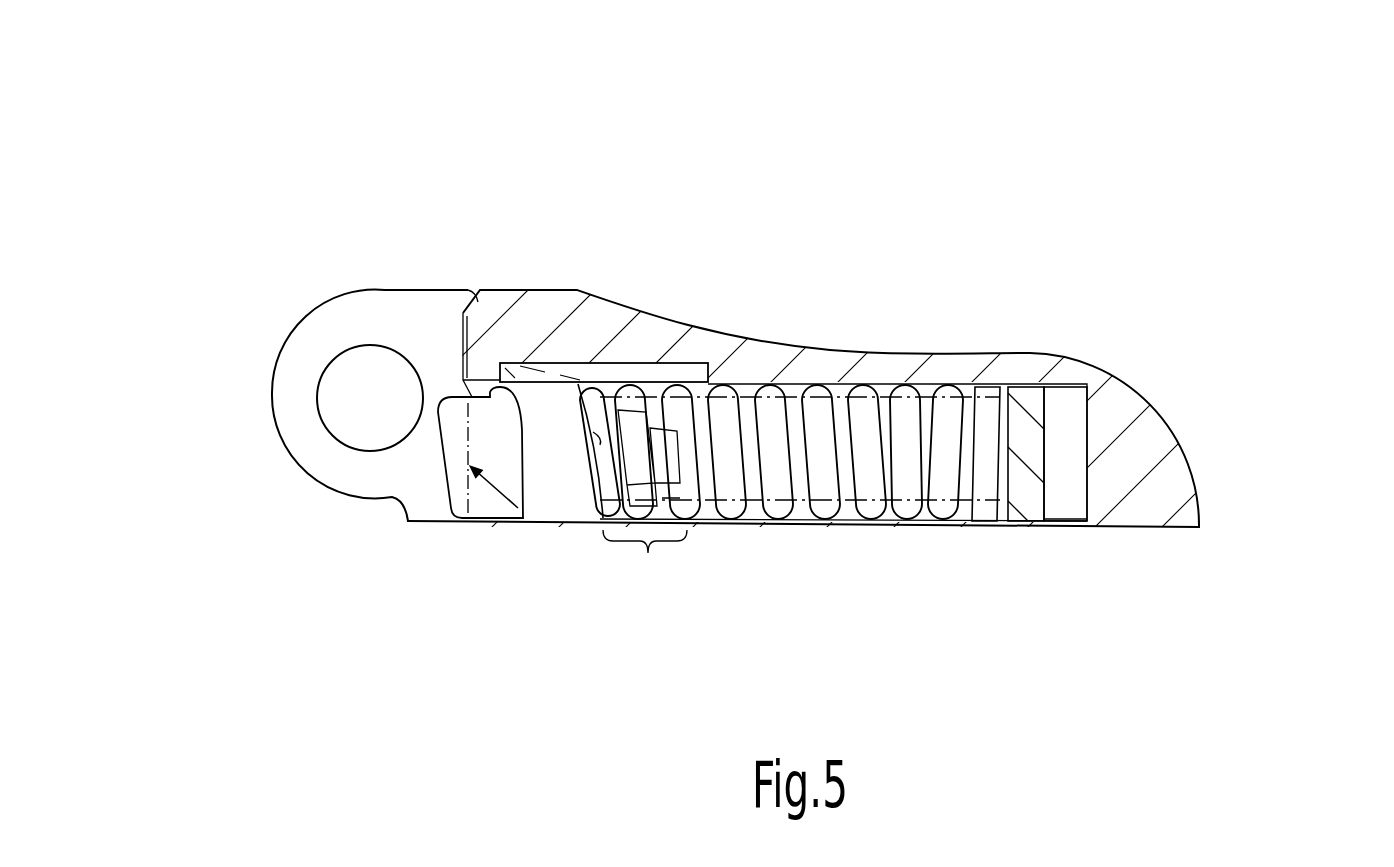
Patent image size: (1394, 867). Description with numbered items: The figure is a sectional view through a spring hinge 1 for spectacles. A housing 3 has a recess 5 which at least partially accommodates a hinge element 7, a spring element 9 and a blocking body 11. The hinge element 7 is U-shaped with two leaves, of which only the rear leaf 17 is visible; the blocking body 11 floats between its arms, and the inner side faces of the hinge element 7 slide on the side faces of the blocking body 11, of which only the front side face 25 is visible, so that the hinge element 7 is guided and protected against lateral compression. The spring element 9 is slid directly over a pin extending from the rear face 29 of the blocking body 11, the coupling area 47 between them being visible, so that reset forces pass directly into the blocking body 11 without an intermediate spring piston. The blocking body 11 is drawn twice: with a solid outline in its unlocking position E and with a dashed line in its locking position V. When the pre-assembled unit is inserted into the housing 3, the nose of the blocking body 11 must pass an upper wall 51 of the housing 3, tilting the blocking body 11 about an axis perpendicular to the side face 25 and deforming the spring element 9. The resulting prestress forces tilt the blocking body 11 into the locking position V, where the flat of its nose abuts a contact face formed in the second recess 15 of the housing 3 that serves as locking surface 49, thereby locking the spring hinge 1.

The spring hinge 1 is at (941, 233).
The housing 3 is at (1167, 490).
The recess 5 is at (1068, 413).
The hinge element 7 is at (1023, 492).
The spring element 9 is at (943, 483).
The blocking body 11 is at (463, 507).
The second recess 15 is at (692, 375).
The rear leaf 17 is at (313, 353).
The front side face 25 is at (556, 472).
The rear face 29 is at (613, 382).
The coupling area 47 is at (648, 553).
The locking surface 49 is at (523, 367).
The upper wall 51 is at (522, 521).
The unlocking position E is at (440, 477).
The locking position V is at (492, 488).